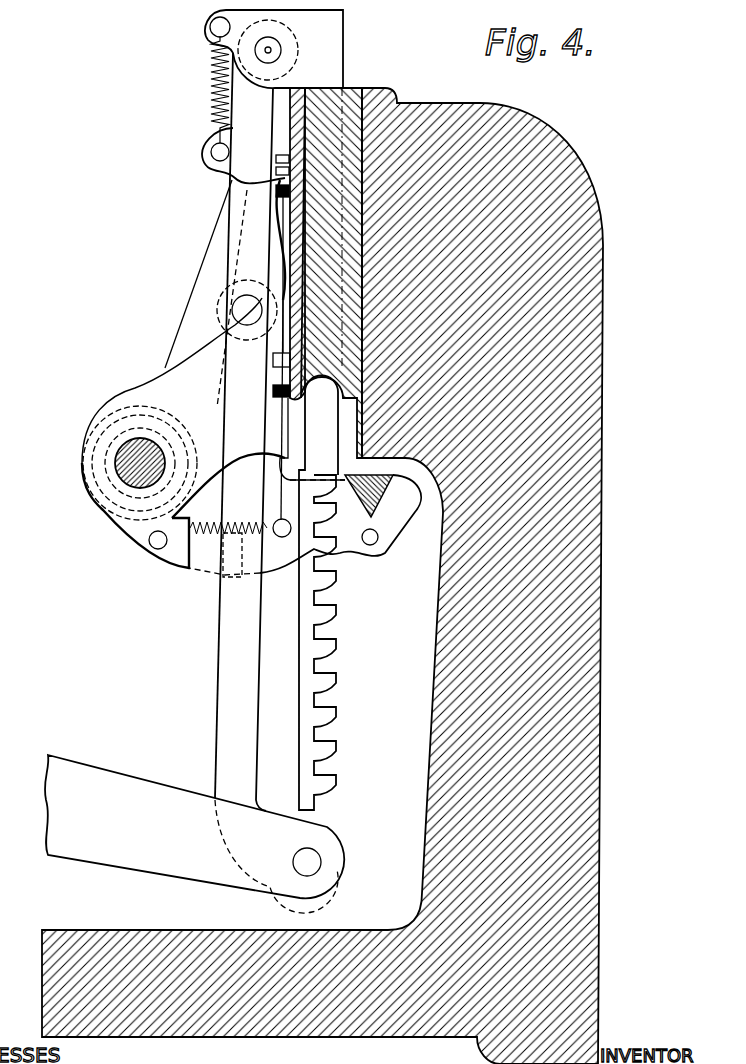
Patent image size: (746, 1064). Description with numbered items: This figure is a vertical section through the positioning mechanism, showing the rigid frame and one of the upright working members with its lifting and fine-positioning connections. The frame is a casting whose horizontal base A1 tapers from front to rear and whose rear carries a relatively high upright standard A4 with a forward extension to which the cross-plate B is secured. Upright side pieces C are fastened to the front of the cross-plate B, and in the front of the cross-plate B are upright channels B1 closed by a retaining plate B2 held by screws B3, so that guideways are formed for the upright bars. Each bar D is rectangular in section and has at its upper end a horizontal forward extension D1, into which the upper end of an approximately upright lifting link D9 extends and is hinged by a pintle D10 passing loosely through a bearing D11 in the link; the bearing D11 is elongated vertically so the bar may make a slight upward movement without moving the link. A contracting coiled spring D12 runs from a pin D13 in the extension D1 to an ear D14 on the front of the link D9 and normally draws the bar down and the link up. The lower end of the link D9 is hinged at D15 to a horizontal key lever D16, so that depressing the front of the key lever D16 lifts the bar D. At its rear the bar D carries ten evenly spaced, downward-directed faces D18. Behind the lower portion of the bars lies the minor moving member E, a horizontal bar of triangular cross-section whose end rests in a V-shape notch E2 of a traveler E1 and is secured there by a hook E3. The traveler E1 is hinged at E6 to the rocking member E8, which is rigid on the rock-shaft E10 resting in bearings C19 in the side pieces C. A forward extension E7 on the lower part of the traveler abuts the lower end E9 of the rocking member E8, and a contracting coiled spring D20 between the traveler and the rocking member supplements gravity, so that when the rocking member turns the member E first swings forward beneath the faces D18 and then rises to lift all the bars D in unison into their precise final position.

The upright standard A4 is at (606, 372).
The horizontal base A1 is at (100, 935).
The cross-plate B is at (360, 88).
The upright channel B1 is at (345, 90).
The retaining plate B2 is at (290, 217).
The screw B3 is at (273, 170).
The bar D is at (321, 426).
The downward-directed face D18 is at (331, 677).
The forward extension D1 is at (210, 22).
The pin D13 is at (216, 33).
The pintle D10 is at (270, 50).
The bearing D11 is at (262, 53).
The contracting coiled spring D12 is at (211, 113).
The ear D14 is at (217, 155).
The lifting link D9 is at (228, 723).
The key lever D16 is at (90, 770).
The hinge D15 is at (313, 862).
The contracting coiled spring D20 is at (214, 545).
The minor moving member E is at (388, 490).
The traveler E1 is at (228, 270).
The V-shape notch E2 is at (378, 505).
The hook E3 is at (352, 478).
The hinge E6 is at (235, 305).
The forward extension E7 is at (233, 578).
The rocking member E8 is at (183, 340).
The lower end of rocking member E9 is at (184, 545).
The rock-shaft E10 is at (123, 453).
The side piece C is at (133, 393).
The bearing C19 is at (115, 478).